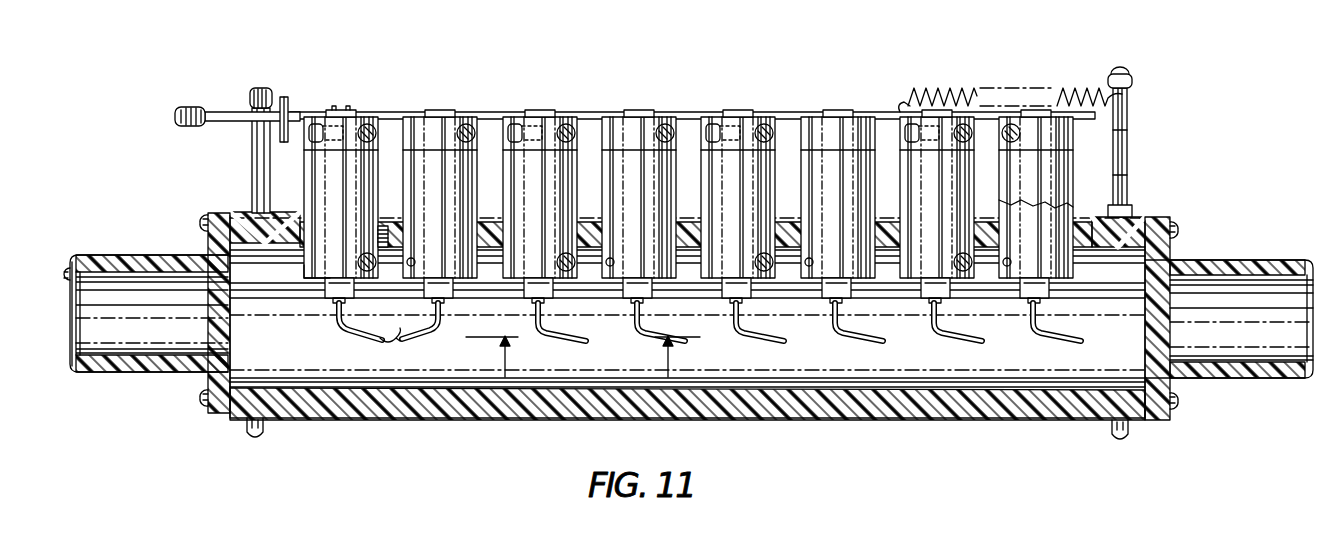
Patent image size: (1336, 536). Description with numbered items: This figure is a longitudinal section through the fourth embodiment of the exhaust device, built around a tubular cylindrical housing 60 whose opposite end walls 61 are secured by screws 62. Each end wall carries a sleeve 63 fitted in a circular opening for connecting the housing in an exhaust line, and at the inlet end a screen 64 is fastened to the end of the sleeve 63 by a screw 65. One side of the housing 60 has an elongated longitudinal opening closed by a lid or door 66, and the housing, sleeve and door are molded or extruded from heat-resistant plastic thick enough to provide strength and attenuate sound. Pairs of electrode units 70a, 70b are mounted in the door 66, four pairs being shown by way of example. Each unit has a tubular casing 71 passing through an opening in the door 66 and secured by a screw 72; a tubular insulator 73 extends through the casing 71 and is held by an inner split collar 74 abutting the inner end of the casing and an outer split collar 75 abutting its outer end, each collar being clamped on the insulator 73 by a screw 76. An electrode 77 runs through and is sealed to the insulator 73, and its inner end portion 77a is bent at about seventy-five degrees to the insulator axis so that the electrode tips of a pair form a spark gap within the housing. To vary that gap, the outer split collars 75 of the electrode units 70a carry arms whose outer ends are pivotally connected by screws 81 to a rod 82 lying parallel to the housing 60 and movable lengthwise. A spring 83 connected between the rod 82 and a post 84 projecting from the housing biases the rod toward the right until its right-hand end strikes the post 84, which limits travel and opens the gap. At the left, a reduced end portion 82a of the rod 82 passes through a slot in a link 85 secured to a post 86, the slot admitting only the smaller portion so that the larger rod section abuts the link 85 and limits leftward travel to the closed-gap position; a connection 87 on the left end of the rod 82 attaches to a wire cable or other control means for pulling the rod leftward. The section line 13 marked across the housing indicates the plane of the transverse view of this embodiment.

The section line 13 is at (590, 357).
The housing 60 is at (888, 420).
The end walls 61 is at (222, 418).
The screws 62 is at (200, 398).
The sleeve 63 is at (130, 258).
The screen 64 is at (70, 350).
The screw 65 is at (66, 265).
The door 66 is at (290, 215).
The electrode unit 70a is at (369, 214).
The electrode unit 70b is at (475, 121).
The tubular casing 71 is at (323, 197).
The screw 72 is at (386, 248).
The tubular insulator 73 is at (321, 322).
The inner split collar 74 is at (310, 275).
The outer split collar 75 is at (666, 124).
The screw 76 is at (370, 272).
The electrode 77 is at (333, 317).
The inner end portion 77a is at (398, 344).
The screws 81 is at (367, 91).
The rod 82 is at (592, 112).
The reduced end portion 82a is at (224, 113).
The spring 83 is at (910, 100).
The post 84 is at (1130, 146).
The link 85 is at (287, 100).
The post 86 is at (252, 149).
The connection 87 is at (180, 108).